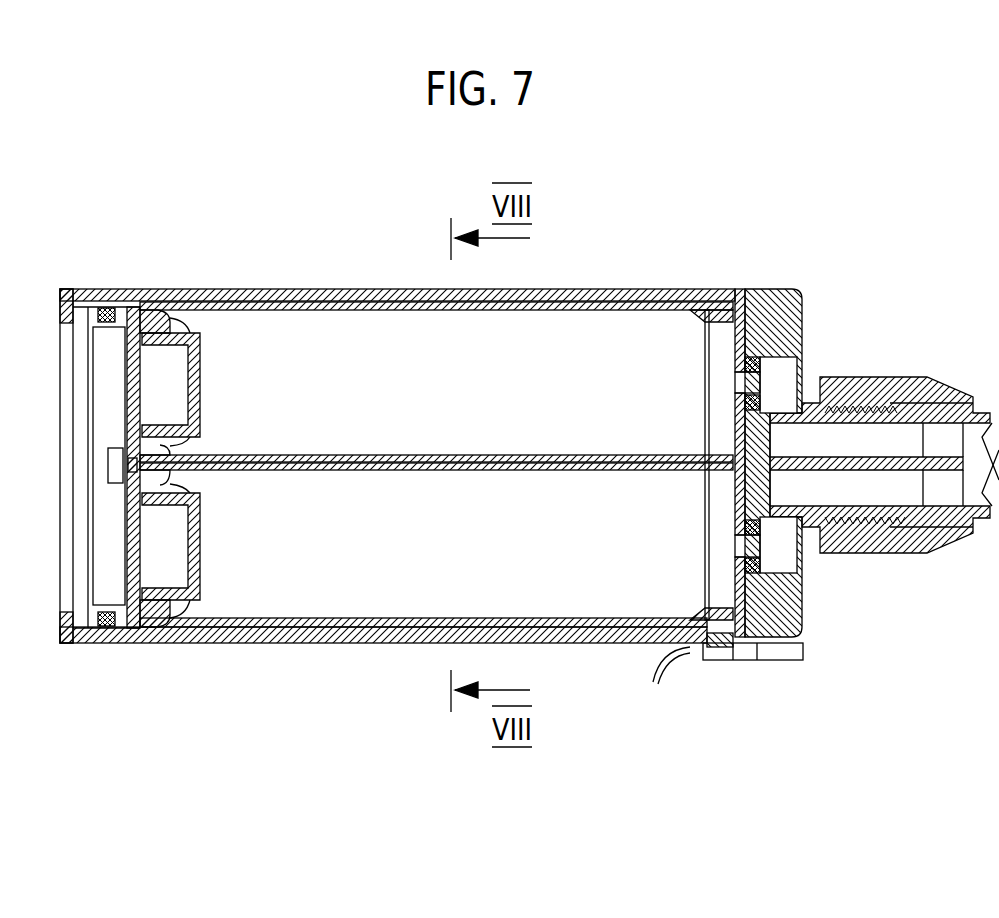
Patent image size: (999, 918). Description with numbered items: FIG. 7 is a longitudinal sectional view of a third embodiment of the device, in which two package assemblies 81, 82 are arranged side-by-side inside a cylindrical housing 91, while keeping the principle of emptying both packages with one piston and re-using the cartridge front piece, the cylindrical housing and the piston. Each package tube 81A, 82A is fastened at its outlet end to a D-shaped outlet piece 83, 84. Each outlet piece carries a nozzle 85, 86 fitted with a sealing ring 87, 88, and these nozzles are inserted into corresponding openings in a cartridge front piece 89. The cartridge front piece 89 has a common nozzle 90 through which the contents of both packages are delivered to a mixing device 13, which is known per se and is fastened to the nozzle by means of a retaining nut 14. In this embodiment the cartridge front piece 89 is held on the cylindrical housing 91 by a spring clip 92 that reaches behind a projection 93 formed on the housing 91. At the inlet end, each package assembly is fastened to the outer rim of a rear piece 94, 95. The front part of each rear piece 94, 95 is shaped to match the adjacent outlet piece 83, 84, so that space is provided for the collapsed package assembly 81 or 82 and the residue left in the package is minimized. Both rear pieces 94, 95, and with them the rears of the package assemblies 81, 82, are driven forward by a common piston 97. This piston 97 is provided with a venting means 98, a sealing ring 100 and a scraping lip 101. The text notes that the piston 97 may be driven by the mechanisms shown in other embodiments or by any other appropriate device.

The cylindrical housing 91 is at (400, 640).
The package tube 81A is at (330, 293).
The package tube 82A is at (505, 622).
The package assembly 81 is at (359, 418).
The package assembly 82 is at (359, 543).
The rear piece 94 is at (185, 330).
The rear piece 95 is at (185, 602).
The common piston 97 is at (115, 392).
The venting means 98 is at (118, 450).
The sealing ring 100 is at (108, 305).
The scraping lip 101 is at (150, 640).
The D-shaped outlet piece 83 is at (740, 289).
The cartridge front piece 89 is at (808, 589).
The common nozzle 90 is at (843, 437).
The mixing device 13 is at (935, 383).
The retaining nut 14 is at (935, 527).
The nozzle 85 is at (768, 355).
The nozzle 86 is at (770, 590).
The sealing ring 87 is at (735, 363).
The sealing ring 88 is at (735, 560).
The D-shaped outlet piece 84 is at (737, 660).
The spring clip 92 is at (705, 655).
The projection 93 is at (635, 652).